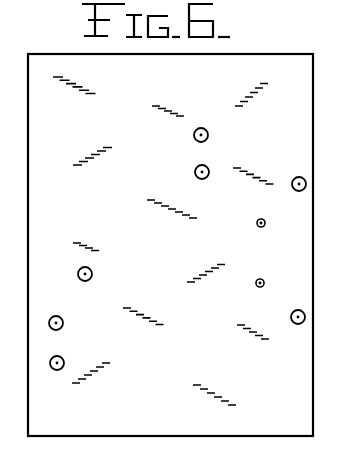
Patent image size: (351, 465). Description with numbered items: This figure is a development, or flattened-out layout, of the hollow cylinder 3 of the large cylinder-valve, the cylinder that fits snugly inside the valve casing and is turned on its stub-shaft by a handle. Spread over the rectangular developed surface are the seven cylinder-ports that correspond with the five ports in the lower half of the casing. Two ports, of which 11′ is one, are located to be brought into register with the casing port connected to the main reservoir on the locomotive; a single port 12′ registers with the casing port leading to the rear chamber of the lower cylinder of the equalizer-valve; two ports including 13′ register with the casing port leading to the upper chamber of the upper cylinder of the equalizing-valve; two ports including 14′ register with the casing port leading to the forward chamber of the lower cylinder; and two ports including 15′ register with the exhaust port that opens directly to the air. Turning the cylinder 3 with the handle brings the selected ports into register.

The hollow cylinder 3 is at (170, 245).
The cylinder-port 11′ is at (70, 323).
The cylinder-port 12′ is at (99, 275).
The cylinder-port 13′ is at (257, 233).
The cylinder-port 14′ is at (296, 176).
The cylinder-port 15′ is at (215, 136).